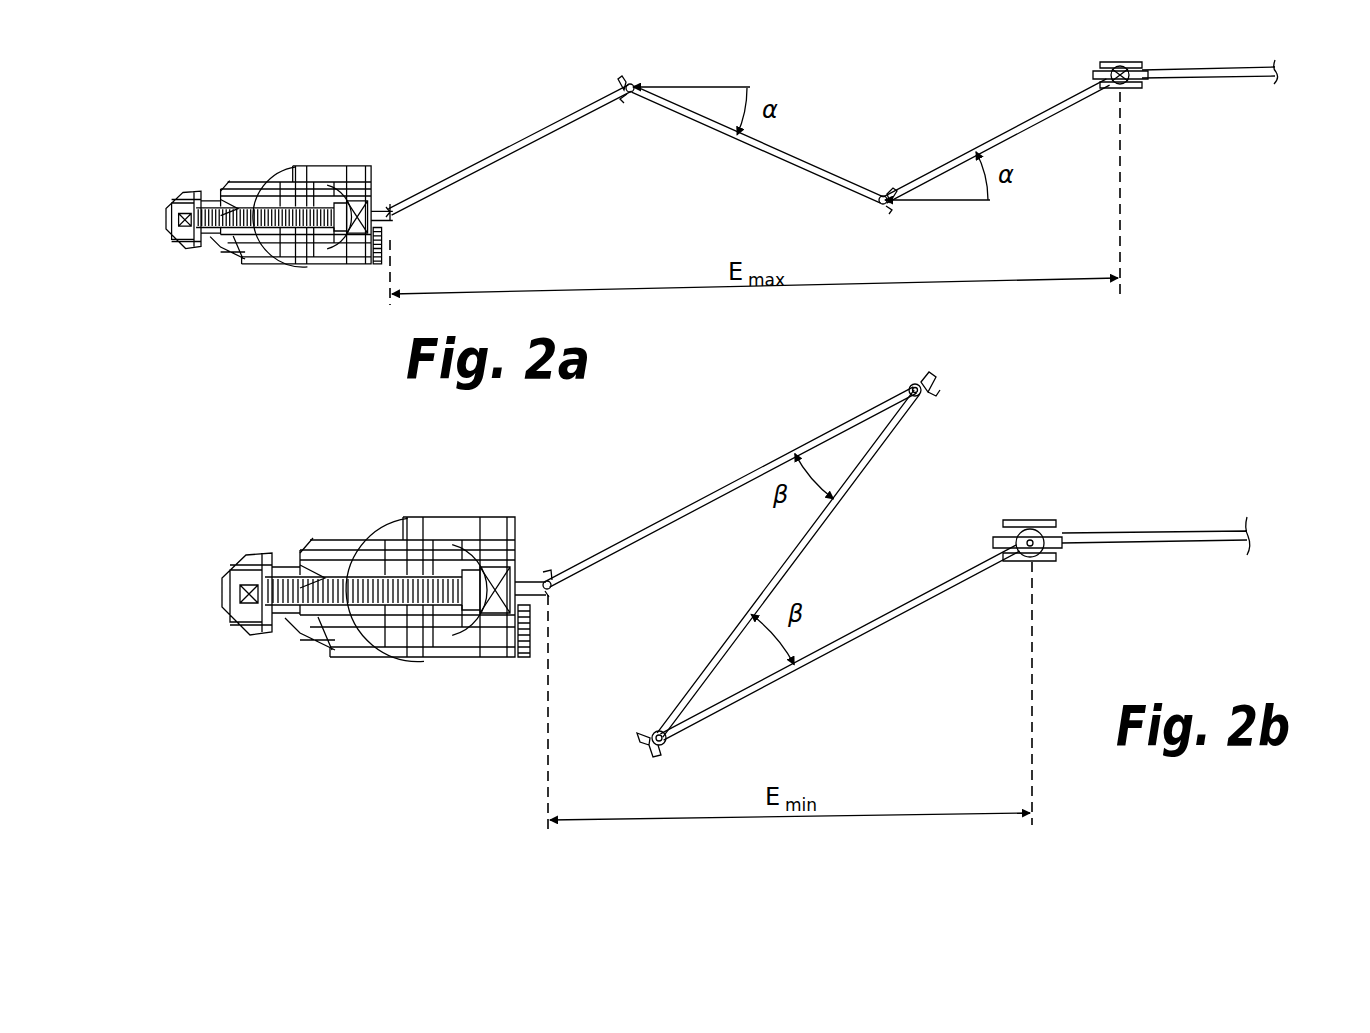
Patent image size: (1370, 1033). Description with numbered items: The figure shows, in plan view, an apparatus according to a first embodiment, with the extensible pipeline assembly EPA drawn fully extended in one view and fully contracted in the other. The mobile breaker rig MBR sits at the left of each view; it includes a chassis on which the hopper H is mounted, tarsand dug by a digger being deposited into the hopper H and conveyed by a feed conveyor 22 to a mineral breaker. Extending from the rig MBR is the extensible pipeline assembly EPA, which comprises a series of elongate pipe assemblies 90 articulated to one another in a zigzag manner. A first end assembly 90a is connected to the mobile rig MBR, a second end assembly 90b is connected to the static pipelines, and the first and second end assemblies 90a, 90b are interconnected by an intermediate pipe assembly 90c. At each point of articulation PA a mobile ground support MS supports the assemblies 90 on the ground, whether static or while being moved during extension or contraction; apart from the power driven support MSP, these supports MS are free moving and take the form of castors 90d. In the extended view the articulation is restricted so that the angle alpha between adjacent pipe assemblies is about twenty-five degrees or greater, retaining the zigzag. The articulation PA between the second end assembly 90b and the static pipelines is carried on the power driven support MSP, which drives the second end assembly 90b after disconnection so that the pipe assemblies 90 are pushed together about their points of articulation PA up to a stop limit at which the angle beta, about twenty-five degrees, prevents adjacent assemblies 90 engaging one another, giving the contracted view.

In FIG. 2A, the elongate pipe assemblies 90 is at (748, 126).
In FIG. 2B, the elongate pipe assemblies 90 is at (782, 563).
In FIG. 2A, the first end assembly 90a is at (552, 134).
In FIG. 2B, the first end assembly 90a is at (713, 499).
In FIG. 2A, the second end assembly 90b is at (1055, 114).
In FIG. 2B, the second end assembly 90b is at (890, 619).
In FIG. 2A, the intermediate pipe assembly 90c is at (782, 160).
In FIG. 2B, the intermediate pipe assembly 90c is at (812, 537).
In FIG. 2B, the castors 90d is at (926, 377).
In FIG. 2B, the feed conveyor 22 is at (370, 637).
In FIG. 2A, the hopper H is at (235, 287).
In FIG. 2B, the hopper H is at (225, 622).
In FIG. 2A, the mobile breaker rig MBR is at (291, 162).
In FIG. 2B, the mobile breaker rig MBR is at (418, 512).
In FIG. 2A, the coupling point CP is at (1143, 72).
In FIG. 2B, the coupling point CP is at (1065, 546).
In FIG. 2B, the point of articulation PA is at (551, 578).
In FIG. 2B, the mobile ground support MS is at (940, 383).
In FIG. 2B, the power driven support MSP is at (1065, 522).
In FIG. 2B, the extensible pipeline assembly EPA is at (945, 484).